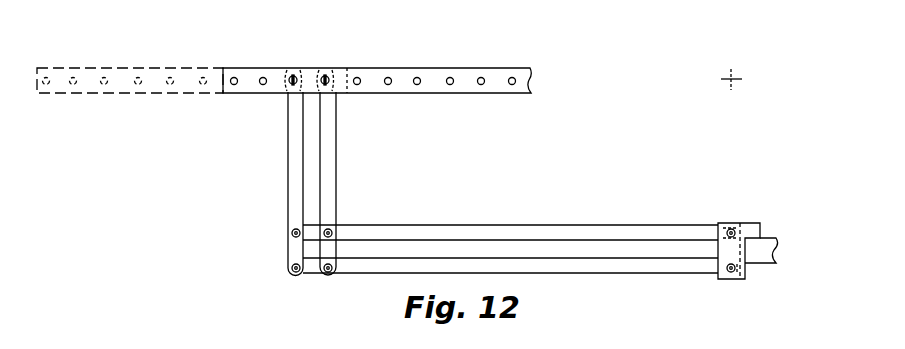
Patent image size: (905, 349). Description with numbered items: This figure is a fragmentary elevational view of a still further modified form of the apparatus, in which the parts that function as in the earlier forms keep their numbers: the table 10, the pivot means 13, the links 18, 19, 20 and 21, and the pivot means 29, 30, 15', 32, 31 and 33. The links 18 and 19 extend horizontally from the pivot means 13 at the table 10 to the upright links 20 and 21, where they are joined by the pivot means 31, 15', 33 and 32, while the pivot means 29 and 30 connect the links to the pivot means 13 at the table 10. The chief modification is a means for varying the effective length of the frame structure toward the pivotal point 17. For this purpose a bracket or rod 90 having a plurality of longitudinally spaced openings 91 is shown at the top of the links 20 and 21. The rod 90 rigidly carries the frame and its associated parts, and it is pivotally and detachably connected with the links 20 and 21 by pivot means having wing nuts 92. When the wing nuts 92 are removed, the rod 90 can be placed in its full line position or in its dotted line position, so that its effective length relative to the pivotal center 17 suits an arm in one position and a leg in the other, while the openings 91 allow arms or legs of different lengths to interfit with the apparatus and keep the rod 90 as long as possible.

The table 10 is at (764, 258).
The pivot means 13 is at (738, 221).
The pivot means 15' is at (352, 217).
The pivotal point 17 is at (748, 77).
The link 18 is at (630, 234).
The link 19 is at (629, 268).
The link 20 is at (296, 191).
The link 21 is at (327, 193).
The pivot means 29 is at (727, 232).
The pivot means 30 is at (729, 271).
The pivot means 31 is at (292, 233).
The pivot means 32 is at (332, 272).
The pivot means 33 is at (292, 270).
The rod 90 is at (441, 93).
The openings 91 is at (417, 77).
The wing nuts 92 is at (326, 73).